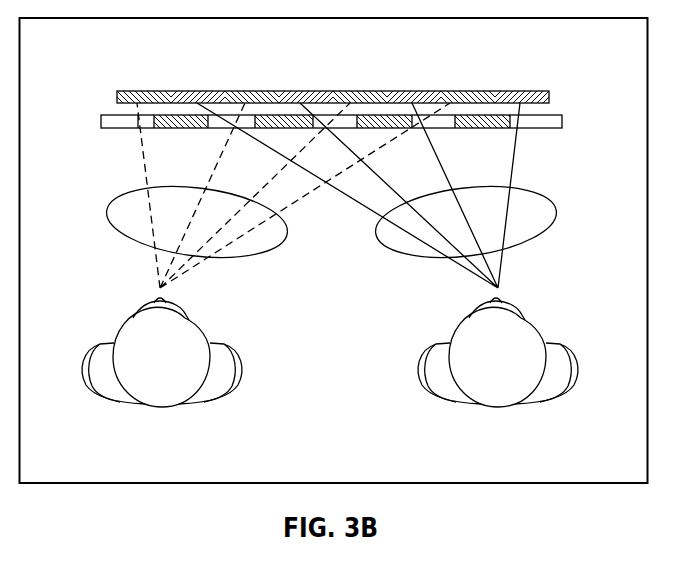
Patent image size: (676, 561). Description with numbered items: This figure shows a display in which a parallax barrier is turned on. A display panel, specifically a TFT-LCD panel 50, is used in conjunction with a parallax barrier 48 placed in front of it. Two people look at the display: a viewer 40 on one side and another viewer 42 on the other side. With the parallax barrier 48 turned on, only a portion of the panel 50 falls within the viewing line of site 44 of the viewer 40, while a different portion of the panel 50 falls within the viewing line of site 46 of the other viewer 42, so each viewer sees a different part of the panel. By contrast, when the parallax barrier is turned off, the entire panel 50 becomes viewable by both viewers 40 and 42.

The viewer 40 is at (107, 341).
The another viewer 42 is at (555, 340).
The viewing line of site 44 is at (126, 196).
The viewing line of site 46 is at (545, 197).
The parallax barrier 48 is at (563, 121).
The TFT-LCD panel 50 is at (551, 95).